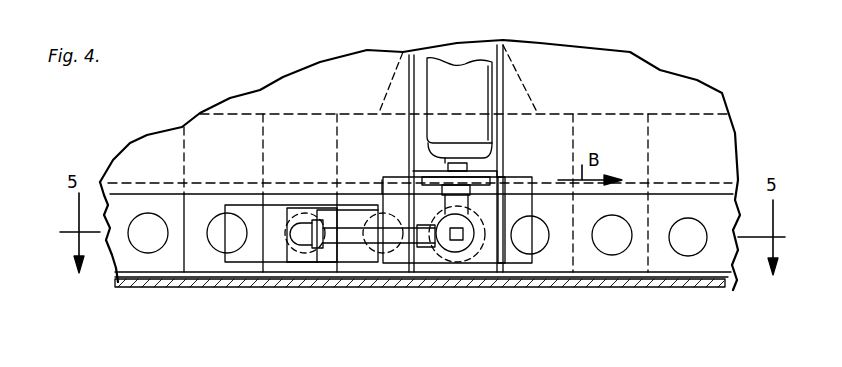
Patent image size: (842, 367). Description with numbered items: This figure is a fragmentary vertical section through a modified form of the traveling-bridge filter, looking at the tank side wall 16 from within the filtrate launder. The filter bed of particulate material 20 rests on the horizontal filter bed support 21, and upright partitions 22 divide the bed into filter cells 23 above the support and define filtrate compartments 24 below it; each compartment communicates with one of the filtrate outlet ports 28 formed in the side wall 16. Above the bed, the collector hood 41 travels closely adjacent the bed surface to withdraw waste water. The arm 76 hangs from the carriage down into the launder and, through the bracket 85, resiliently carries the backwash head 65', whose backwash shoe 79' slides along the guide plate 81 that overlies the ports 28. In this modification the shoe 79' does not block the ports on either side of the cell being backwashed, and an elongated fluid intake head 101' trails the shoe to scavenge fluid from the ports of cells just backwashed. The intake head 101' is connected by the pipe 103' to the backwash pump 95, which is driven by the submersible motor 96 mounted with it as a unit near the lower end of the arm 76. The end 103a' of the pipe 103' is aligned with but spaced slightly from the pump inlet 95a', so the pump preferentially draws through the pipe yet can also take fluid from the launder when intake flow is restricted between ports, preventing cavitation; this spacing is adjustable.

The side wall 16 is at (620, 70).
The filter bed of particulate material 20 is at (697, 113).
The filter bed support 21 is at (680, 182).
The partitions 22 is at (270, 137).
The filter cells 23 is at (612, 133).
The filtrate compartments 24 is at (628, 262).
The filtrate outlet ports 28 is at (605, 254).
The collector hood 41 is at (519, 82).
The backwash head 65' is at (516, 259).
The arm 76 is at (510, 97).
The backwash shoe 79' is at (444, 252).
The guide plate 81 is at (678, 263).
The bracket 85 is at (382, 180).
The backwash pump 95 is at (481, 148).
The inlet of the backwash pump 95a' is at (461, 129).
The motor 96 is at (478, 72).
The fluid intake head 101' is at (301, 269).
The pipe 103' is at (379, 281).
The end of the pipe 103a' is at (504, 166).